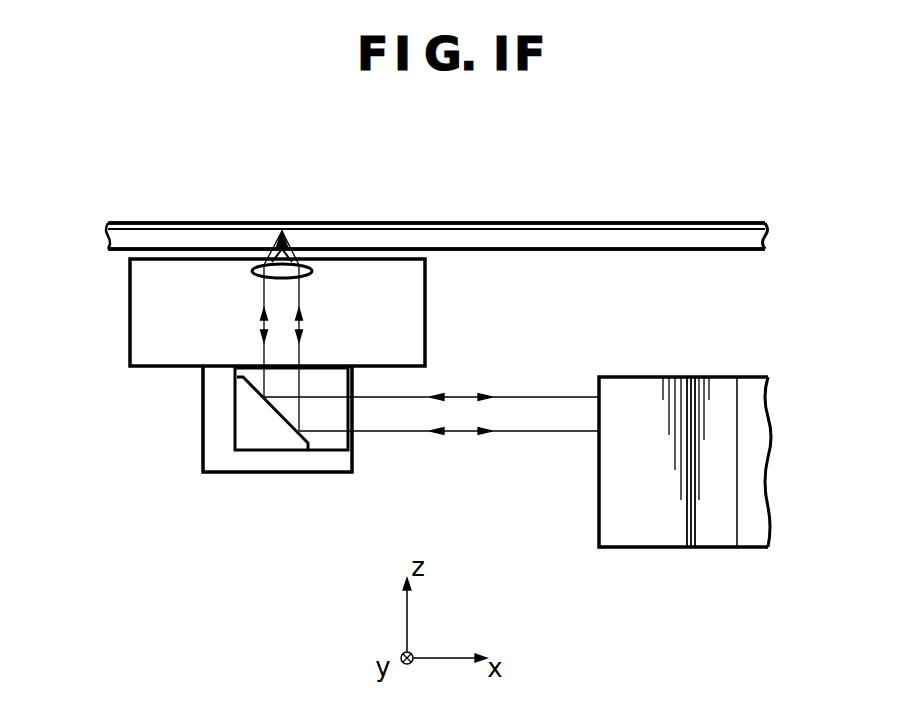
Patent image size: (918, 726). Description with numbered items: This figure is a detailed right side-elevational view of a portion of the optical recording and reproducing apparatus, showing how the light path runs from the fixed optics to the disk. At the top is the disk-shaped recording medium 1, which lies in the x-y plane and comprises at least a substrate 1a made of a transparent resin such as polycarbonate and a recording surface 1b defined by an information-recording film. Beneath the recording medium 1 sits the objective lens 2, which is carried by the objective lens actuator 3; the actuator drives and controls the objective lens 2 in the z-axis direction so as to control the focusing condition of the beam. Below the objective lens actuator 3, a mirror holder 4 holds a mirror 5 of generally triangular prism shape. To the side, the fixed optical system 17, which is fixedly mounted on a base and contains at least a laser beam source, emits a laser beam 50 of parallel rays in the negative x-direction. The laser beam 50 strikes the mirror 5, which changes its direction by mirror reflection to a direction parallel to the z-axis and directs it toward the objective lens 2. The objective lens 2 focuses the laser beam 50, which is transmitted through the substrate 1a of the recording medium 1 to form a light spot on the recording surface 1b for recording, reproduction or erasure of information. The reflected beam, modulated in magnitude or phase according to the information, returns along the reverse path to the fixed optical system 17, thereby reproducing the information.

The recording medium 1 is at (445, 222).
The substrate 1a is at (107, 249).
The recording surface 1b is at (107, 226).
The objective lens 2 is at (256, 276).
The objective lens actuator 3 is at (425, 305).
The mirror holder 4 is at (210, 414).
The mirror 5 is at (302, 440).
The fixed optical system 17 is at (600, 525).
The laser beam 50 is at (509, 431).